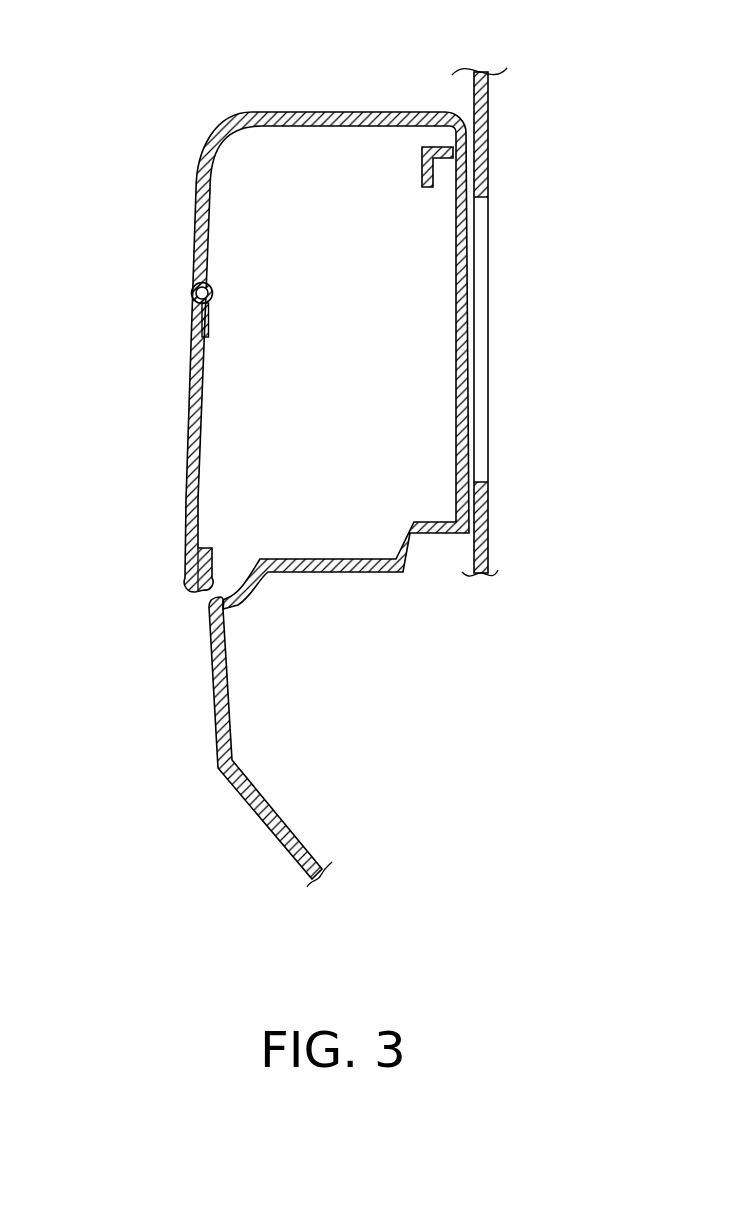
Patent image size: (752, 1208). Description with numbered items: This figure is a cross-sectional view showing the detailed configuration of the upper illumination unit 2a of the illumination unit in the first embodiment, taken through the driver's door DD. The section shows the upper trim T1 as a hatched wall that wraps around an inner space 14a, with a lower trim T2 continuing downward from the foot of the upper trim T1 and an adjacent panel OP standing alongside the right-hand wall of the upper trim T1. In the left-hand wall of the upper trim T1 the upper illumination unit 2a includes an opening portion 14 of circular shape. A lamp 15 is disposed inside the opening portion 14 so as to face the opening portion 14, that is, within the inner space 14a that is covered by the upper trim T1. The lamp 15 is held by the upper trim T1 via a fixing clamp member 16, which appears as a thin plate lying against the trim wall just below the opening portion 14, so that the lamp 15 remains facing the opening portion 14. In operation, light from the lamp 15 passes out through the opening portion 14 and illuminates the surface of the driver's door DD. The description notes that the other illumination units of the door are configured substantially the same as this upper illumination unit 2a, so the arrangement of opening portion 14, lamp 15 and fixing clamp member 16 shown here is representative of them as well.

The driver's door DD is at (176, 82).
The upper trim T1 is at (193, 192).
The second trim member T2 is at (217, 706).
The opening panel OP is at (488, 137).
The upper illumination unit 2a is at (162, 305).
The opening portion 14 is at (190, 292).
The inner space 14a is at (341, 342).
The lamp 15 is at (191, 298).
The fixing clamp member 16 is at (208, 318).